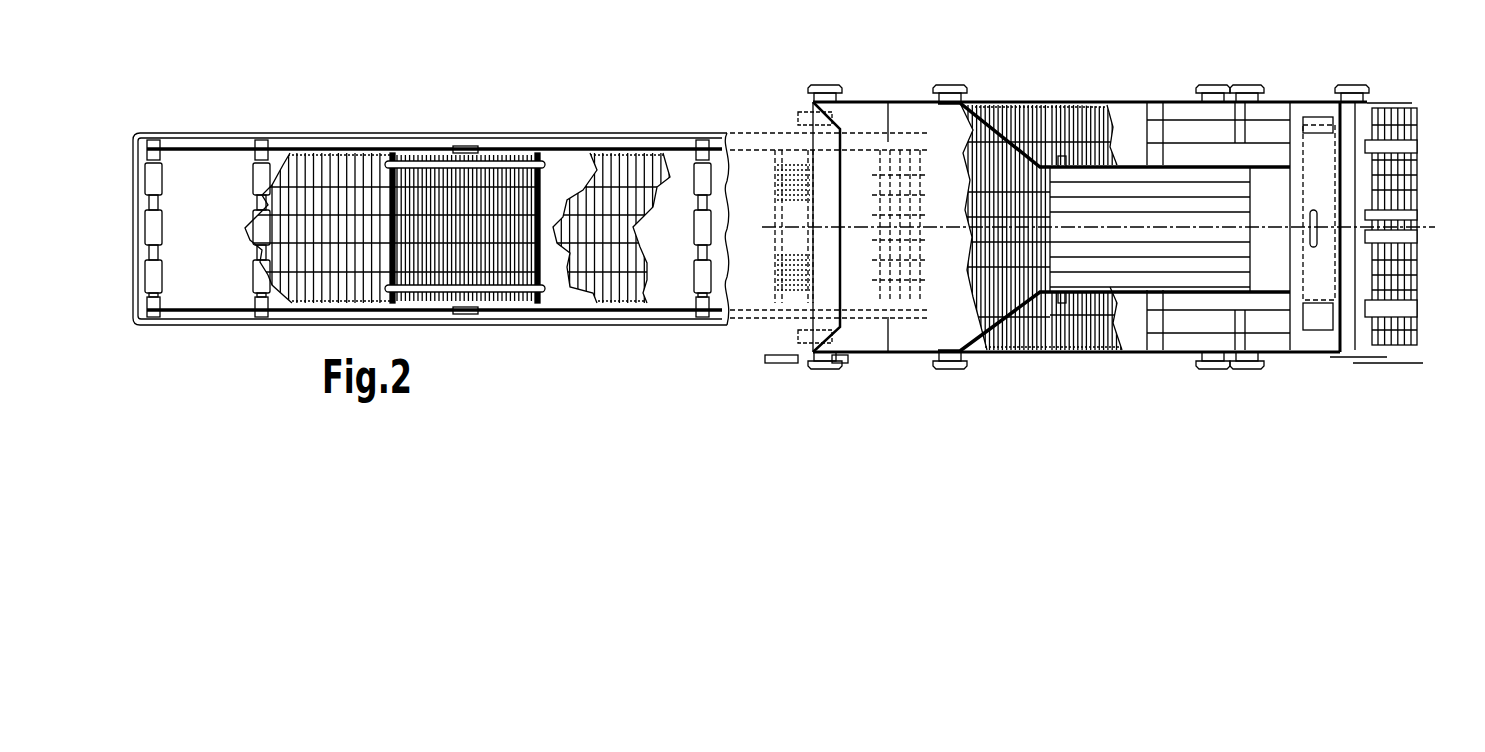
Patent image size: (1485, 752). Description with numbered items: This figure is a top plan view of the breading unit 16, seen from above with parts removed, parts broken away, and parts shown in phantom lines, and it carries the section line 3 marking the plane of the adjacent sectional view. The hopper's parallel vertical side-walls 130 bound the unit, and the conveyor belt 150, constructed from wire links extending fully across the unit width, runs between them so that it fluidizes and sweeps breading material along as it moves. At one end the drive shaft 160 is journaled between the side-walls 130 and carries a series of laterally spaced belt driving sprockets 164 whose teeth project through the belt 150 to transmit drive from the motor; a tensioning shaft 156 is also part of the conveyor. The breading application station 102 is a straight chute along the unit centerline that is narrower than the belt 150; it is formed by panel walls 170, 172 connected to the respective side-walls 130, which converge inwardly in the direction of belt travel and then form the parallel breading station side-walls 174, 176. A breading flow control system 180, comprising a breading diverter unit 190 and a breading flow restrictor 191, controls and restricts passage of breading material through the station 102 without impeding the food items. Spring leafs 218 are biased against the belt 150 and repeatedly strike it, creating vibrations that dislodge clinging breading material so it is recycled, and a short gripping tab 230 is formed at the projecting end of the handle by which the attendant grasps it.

The section line 3- 3 is at (762, 228).
The breading unit 16 is at (1133, 372).
The breading application station 102 is at (1232, 157).
The side-walls 130 is at (1040, 102).
The conveyor belt 150 is at (993, 108).
The tensioning shaft 156 is at (1317, 180).
The drive shaft 160 is at (1392, 327).
The belt driving sprockets 164 is at (1417, 213).
The panel wall 170 is at (963, 140).
The panel wall 172 is at (982, 326).
The breading station side-wall 174 is at (1140, 165).
The breading station side-wall 176 is at (1197, 310).
The breading flow control system 180 is at (852, 268).
The breading diverter unit 190 is at (875, 337).
The breading flow restrictor 191 is at (1176, 174).
The spring leafs 218 is at (1167, 130).
The gripping tab 230 is at (1275, 105).